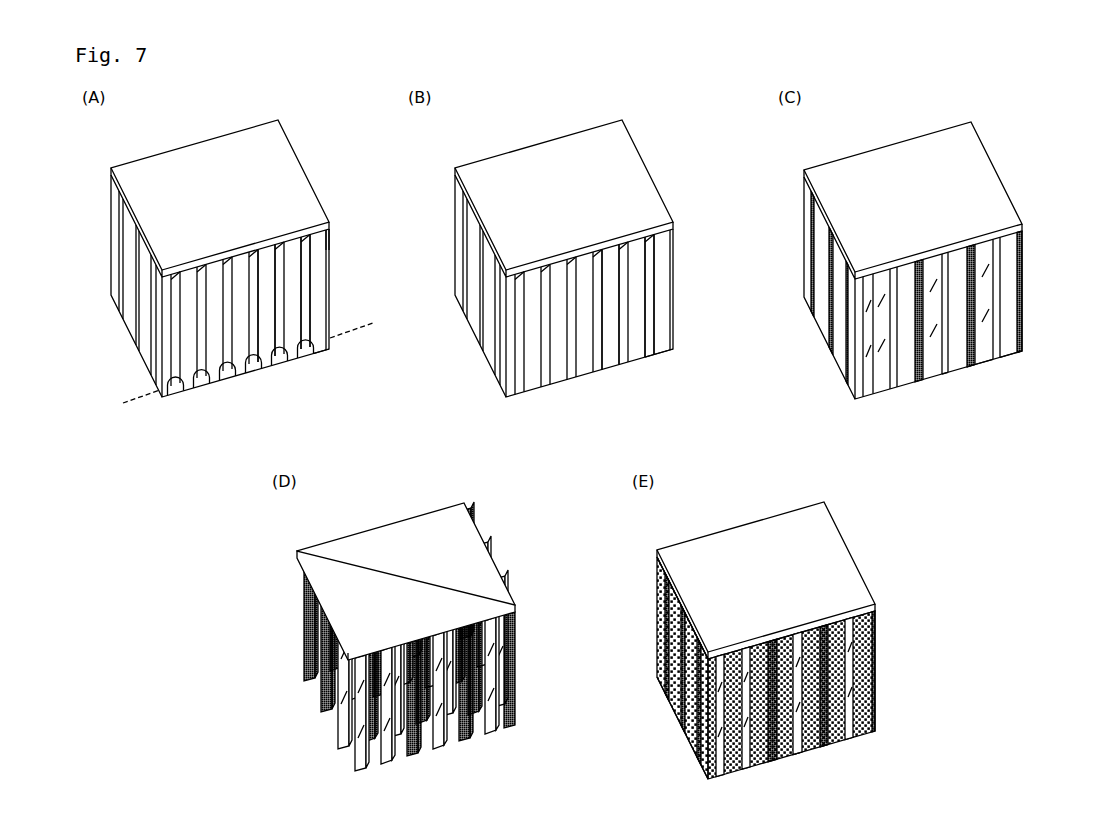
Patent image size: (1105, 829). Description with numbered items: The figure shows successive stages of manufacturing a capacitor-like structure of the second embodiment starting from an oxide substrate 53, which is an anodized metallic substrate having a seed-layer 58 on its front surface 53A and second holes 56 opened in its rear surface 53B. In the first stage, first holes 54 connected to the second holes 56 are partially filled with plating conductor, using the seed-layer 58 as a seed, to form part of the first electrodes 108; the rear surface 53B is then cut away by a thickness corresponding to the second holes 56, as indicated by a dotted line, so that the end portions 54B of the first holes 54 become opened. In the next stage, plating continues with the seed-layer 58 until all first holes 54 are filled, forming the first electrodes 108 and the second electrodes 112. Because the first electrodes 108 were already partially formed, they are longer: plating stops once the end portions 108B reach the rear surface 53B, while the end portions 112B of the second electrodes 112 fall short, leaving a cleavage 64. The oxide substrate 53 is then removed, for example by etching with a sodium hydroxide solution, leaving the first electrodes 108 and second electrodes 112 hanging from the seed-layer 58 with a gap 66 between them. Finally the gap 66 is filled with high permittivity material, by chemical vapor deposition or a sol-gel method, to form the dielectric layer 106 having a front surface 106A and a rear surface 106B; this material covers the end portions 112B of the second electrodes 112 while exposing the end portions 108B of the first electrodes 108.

In FIG. 7A, the seed-layer 58 is at (223, 198).
In FIG. 7B, the seed-layer 58 is at (564, 198).
In FIG. 7C, the seed-layer 58 is at (918, 200).
In FIG. 7D, the seed-layer 58 is at (406, 573).
In FIG. 7E, the seed-layer 58 is at (766, 576).
In FIG. 7A, the oxide substrate 53 is at (249, 286).
In FIG. 7B, the oxide substrate 53 is at (592, 286).
In FIG. 7C, the oxide substrate 53 is at (807, 288).
In FIG. 7A, the front surface of oxide substrate 53A is at (356, 228).
In FIG. 7A, the rear surface of oxide substrate 53B is at (352, 360).
In FIG. 7B, the rear surface of oxide substrate 53B is at (694, 346).
In FIG. 7C, the rear surface of oxide substrate 53B is at (1040, 347).
In FIG. 7A, the first holes 54 is at (345, 292).
In FIG. 7B, the first holes 54 is at (689, 296).
In FIG. 7B, the end portions of first holes 54B is at (669, 377).
In FIG. 7A, the second holes 56 is at (253, 377).
In FIG. 7C, the cleavage 64 is at (1004, 369).
In FIG. 7D, the gap 66 is at (486, 681).
In FIG. 7E, the dielectric layer 106 is at (738, 668).
In FIG. 7E, the front surface of dielectric layer 106A is at (642, 608).
In FIG. 7E, the rear surface of dielectric layer 106B is at (647, 715).
In FIG. 7A, the first electrodes 108 is at (264, 278).
In FIG. 7B, the first electrodes 108 is at (608, 281).
In FIG. 7C, the first electrodes 108 is at (938, 298).
In FIG. 7D, the first electrodes 108 is at (451, 712).
In FIG. 7E, the first electrodes 108 is at (784, 676).
In FIG. 7C, the end portions of first electrodes 108B is at (935, 391).
In FIG. 7E, the end portions of first electrodes 108B is at (818, 767).
In FIG. 7C, the second electrodes 112 is at (991, 306).
In FIG. 7D, the second electrodes 112 is at (411, 715).
In FIG. 7E, the second electrodes 112 is at (845, 686).
In FIG. 7C, the end portions of second electrodes 112B is at (995, 382).
In FIG. 7E, the end portions of second electrodes 112B is at (858, 753).